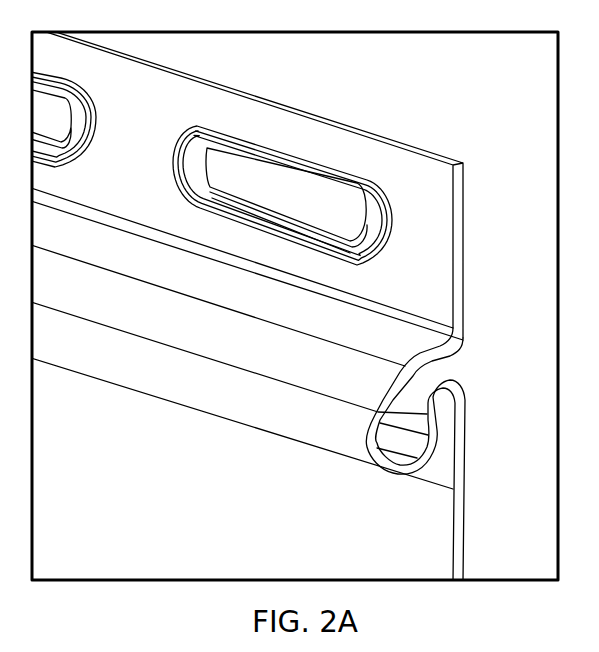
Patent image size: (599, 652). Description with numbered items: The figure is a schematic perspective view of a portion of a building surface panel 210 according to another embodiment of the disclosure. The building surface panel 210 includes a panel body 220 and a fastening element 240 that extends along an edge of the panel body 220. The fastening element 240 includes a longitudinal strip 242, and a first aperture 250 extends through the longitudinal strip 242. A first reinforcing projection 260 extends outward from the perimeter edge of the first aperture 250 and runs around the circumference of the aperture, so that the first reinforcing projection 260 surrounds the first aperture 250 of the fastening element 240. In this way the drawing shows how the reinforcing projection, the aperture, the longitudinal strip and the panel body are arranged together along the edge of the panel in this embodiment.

The building surface panel 210 is at (418, 124).
The panel body 220 is at (192, 524).
The fastening element 240 is at (482, 267).
The longitudinal strip 242 is at (152, 125).
The first aperture 250 is at (300, 203).
The first reinforcing projection 260 is at (325, 177).